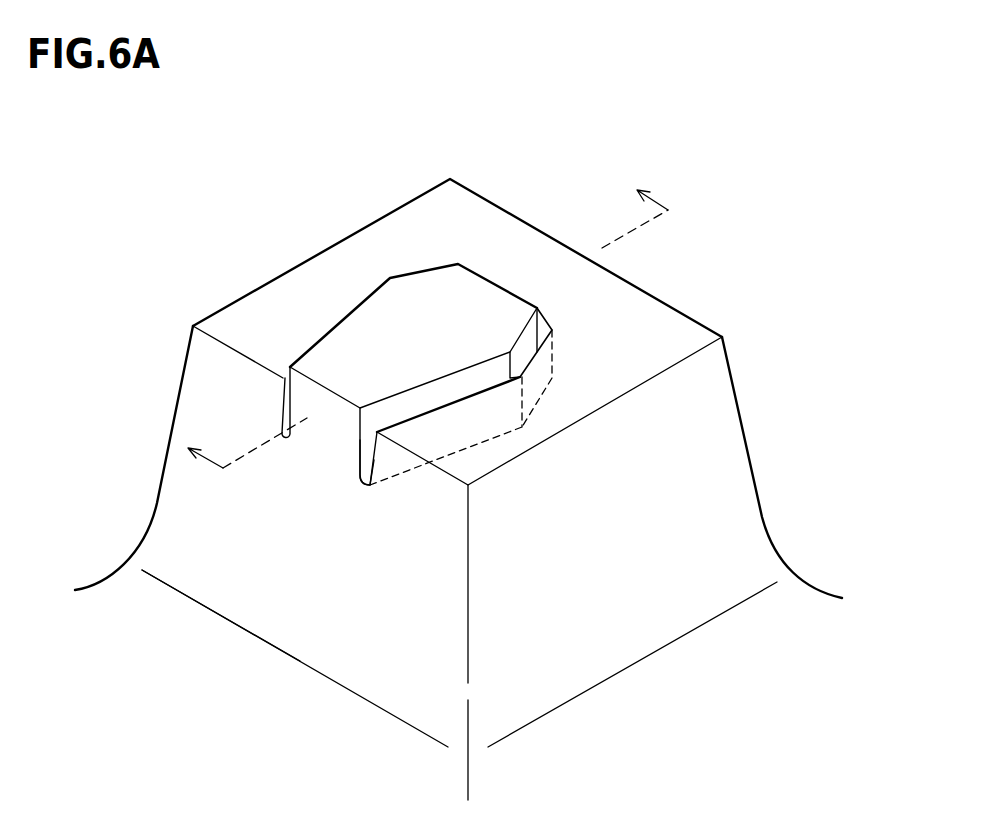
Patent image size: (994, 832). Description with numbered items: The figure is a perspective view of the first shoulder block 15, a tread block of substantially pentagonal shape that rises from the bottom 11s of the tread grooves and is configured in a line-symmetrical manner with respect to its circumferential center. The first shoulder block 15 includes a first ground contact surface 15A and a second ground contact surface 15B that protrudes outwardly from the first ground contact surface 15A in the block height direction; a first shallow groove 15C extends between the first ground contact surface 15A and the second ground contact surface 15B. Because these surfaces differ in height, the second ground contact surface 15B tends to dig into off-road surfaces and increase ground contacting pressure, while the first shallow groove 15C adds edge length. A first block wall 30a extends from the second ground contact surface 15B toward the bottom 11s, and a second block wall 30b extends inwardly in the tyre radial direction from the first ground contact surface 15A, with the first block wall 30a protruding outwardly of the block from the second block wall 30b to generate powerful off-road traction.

The first shoulder block 15 is at (718, 180).
The first ground contact surface 15A is at (556, 268).
The second ground contact surface 15B is at (436, 318).
The first shallow groove 15C is at (528, 346).
The first block wall 30a is at (325, 430).
The second block wall 30b is at (410, 483).
The bottom of the tread grooves 11s is at (155, 652).